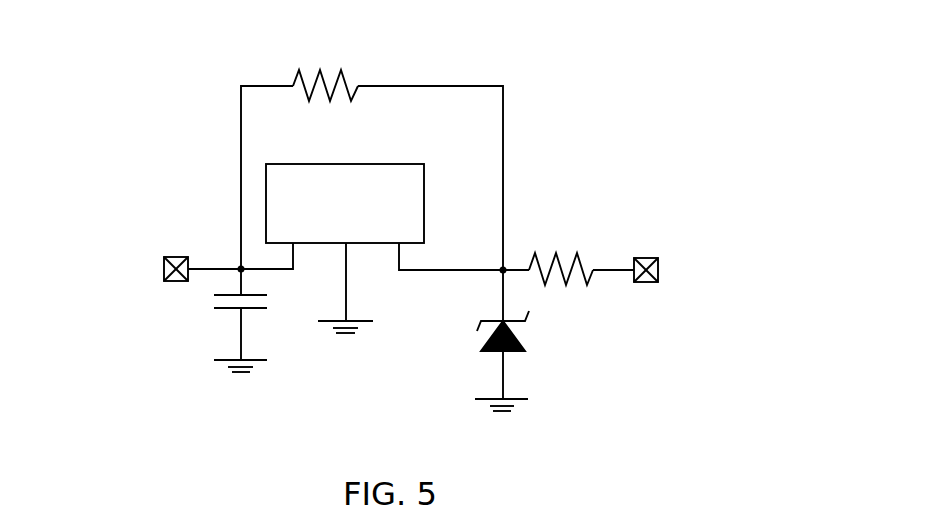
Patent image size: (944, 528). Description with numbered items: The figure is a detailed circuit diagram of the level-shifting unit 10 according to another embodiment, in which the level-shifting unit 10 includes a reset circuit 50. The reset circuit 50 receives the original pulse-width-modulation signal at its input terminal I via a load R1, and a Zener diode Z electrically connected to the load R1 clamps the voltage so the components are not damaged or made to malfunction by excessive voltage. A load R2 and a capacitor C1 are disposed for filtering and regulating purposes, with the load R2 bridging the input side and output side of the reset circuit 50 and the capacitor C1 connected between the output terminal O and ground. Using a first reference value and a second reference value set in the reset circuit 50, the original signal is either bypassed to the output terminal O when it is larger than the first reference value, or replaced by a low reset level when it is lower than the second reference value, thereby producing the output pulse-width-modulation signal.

The level-shifting unit 10 is at (128, 48).
The reset circuit 50 is at (425, 190).
The load R1 is at (561, 253).
The load R2 is at (325, 72).
The capacitor C1 is at (257, 320).
The Zener diode Z is at (512, 340).